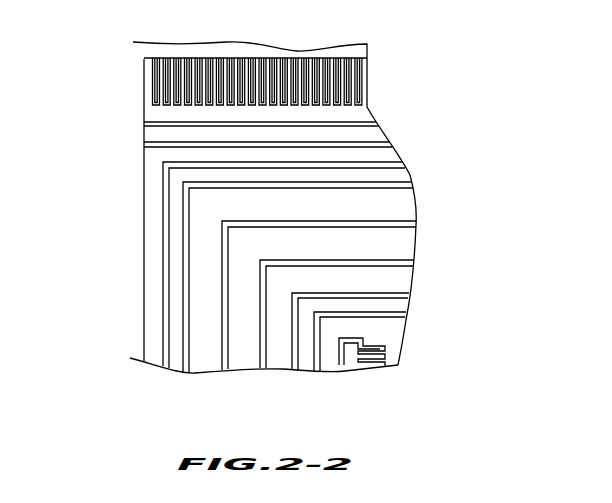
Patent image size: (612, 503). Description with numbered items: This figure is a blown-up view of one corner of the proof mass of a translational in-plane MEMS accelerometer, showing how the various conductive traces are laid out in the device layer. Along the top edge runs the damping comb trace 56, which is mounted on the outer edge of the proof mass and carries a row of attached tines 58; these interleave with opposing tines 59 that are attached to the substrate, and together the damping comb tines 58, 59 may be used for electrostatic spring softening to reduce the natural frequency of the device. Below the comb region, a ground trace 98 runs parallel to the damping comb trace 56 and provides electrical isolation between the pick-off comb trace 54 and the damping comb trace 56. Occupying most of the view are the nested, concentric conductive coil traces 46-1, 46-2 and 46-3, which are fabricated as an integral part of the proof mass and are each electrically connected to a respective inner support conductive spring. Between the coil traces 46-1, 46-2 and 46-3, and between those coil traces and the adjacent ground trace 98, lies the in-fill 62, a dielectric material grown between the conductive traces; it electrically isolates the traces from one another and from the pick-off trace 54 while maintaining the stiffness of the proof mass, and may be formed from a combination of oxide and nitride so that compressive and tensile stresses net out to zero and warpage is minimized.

The pick-off comb trace 54 is at (150, 207).
The damping comb trace 56 is at (148, 118).
The attached tines 58 is at (163, 62).
The opposing tines 59 is at (157, 62).
The in-fill 62 is at (150, 124).
The ground trace 98 is at (148, 134).
The coil trace 46-1 is at (210, 340).
The coil trace 46-2 is at (245, 353).
The coil trace 46-3 is at (287, 358).